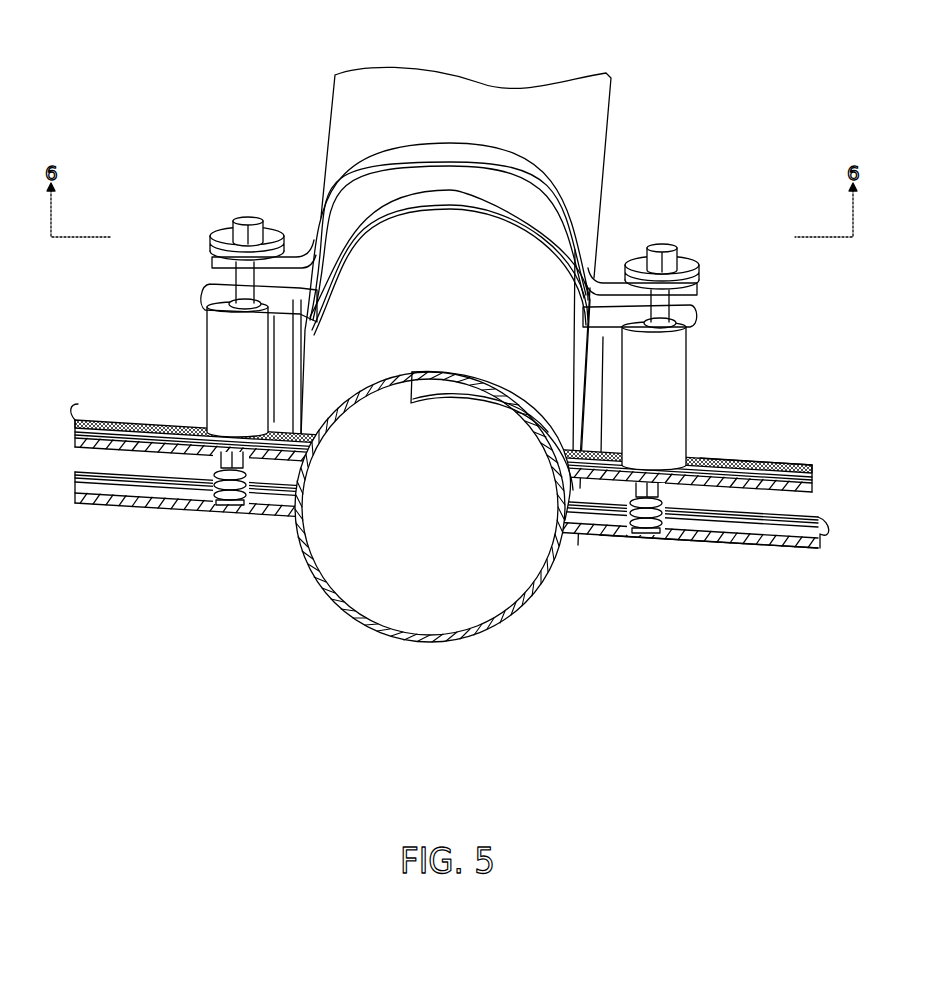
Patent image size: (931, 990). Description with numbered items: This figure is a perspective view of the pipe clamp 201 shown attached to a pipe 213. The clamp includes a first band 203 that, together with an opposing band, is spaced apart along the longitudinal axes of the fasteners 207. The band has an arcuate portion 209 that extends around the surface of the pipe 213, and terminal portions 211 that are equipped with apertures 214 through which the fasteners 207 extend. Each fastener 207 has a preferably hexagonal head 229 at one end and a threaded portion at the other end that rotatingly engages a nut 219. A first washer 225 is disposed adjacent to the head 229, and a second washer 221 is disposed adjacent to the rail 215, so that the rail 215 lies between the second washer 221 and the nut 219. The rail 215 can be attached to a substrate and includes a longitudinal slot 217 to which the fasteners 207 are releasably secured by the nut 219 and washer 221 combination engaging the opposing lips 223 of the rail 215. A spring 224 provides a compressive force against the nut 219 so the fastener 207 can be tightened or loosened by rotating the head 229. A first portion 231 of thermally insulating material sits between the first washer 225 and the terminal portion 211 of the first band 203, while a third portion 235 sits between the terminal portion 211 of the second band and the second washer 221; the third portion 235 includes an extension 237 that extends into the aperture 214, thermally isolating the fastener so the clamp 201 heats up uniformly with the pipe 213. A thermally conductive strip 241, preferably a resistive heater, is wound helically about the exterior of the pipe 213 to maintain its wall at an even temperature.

The pipe clamp 201 is at (204, 183).
The first band 203 is at (507, 141).
The fastener 207 is at (672, 312).
The arcuate portion 209 is at (422, 147).
The terminal portion 211 is at (299, 245).
The pipe 213 is at (450, 312).
The aperture 214 is at (257, 314).
The rail 215 is at (735, 546).
The longitudinal slot 217 is at (170, 418).
The nut 219 is at (212, 459).
The second washer 221 is at (690, 450).
The opposing lips 223 is at (70, 415).
The spring 224 is at (204, 516).
The first washer 225 is at (700, 268).
The head 229 is at (680, 250).
The first portion of thermally insulating material 231 is at (699, 283).
The third portion of thermally insulating material 235 is at (690, 372).
The extension 237 is at (257, 314).
The thermally conductive strip 241 is at (503, 385).